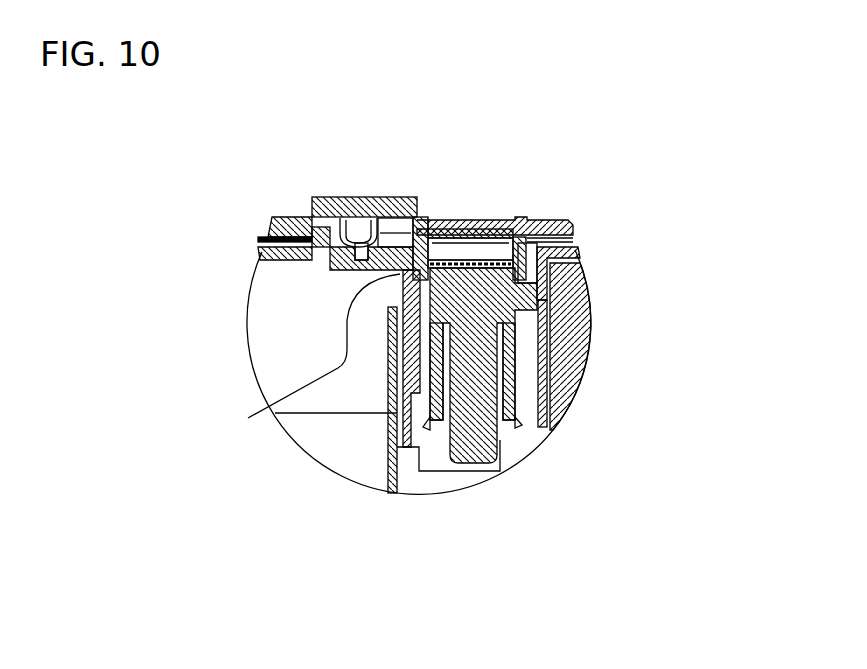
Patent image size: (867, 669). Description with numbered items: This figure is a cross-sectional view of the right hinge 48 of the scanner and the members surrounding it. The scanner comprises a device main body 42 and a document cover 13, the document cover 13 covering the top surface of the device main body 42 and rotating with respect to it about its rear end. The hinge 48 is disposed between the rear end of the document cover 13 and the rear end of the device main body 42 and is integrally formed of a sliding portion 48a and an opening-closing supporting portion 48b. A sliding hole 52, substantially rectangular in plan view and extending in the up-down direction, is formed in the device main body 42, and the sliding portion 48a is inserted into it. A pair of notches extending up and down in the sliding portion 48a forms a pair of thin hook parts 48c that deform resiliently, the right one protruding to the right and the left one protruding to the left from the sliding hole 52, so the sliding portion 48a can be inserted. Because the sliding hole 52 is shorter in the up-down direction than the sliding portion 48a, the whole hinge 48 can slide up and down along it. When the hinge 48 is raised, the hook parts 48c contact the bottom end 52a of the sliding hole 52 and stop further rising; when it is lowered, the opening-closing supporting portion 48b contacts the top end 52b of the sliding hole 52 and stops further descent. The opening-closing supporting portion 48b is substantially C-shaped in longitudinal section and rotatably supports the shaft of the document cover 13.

The document cover 13 is at (547, 220).
The device main body 42 is at (257, 243).
The hinge 48 is at (522, 341).
The sliding portion 48a is at (510, 364).
The opening-closing supporting portion 48b is at (482, 253).
The hook parts 48c is at (433, 424).
The sliding hole 52 is at (445, 228).
The bottom end 52a is at (397, 392).
The top end 52b is at (301, 358).